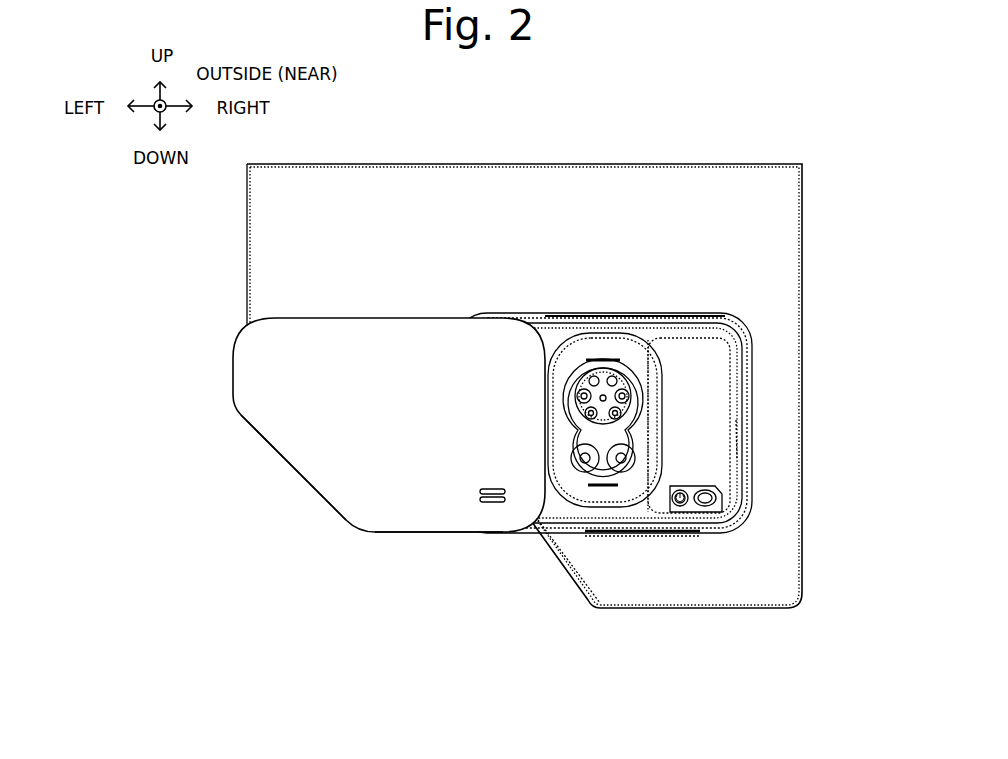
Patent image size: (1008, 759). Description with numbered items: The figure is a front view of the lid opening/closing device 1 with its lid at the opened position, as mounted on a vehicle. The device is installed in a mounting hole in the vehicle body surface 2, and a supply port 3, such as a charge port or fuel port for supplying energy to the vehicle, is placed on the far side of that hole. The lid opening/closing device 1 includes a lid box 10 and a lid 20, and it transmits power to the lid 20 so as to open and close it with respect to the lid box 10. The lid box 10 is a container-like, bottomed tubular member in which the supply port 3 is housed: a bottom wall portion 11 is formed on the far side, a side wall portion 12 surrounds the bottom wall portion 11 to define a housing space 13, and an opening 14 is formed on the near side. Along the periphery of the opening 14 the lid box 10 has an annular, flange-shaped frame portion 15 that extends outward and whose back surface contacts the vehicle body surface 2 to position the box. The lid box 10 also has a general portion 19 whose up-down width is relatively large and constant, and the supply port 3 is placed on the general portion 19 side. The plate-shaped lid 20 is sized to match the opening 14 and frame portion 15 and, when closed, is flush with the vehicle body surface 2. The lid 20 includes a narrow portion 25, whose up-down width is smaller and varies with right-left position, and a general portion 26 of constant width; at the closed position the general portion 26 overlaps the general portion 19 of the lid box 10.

The lid opening/closing device 1 is at (335, 537).
The vehicle body surface 2 is at (258, 256).
The supply port 3 is at (600, 350).
The lid box 10 is at (712, 318).
The bottom wall portion 11 is at (698, 404).
The side wall portion 12 is at (737, 418).
The housing space 13 is at (565, 515).
The opening 14 is at (660, 530).
The frame portion 15 is at (627, 316).
The general portion 19 is at (632, 533).
The lid 20 is at (256, 368).
The narrow portion 25 is at (290, 445).
The general portion 26 is at (417, 522).